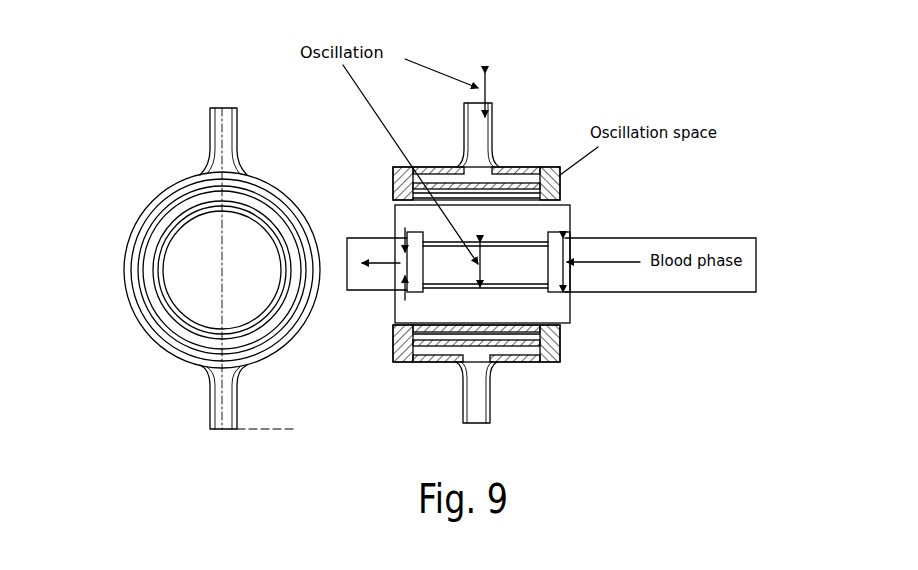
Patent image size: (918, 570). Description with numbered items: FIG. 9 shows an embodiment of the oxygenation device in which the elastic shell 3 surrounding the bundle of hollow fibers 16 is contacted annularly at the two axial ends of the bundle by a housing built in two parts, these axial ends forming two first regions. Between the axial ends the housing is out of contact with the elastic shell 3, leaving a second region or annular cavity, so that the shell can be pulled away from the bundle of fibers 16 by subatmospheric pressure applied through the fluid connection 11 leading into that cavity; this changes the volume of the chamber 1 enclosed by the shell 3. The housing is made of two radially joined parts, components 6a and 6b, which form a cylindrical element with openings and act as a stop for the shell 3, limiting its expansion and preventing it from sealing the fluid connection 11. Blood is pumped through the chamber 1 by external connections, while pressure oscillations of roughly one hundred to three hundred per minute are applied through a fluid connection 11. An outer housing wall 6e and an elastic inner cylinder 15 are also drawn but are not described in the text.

The chamber 1 is at (393, 208).
The elastic shell 3 is at (157, 270).
The housing component 6a is at (555, 165).
The housing component 6b is at (157, 233).
The outer housing wall 6e is at (172, 188).
The fluid connection 11 is at (226, 108).
The elastic inner cylinder 15 is at (548, 240).
The bundle of hollow fibers 16 is at (555, 310).